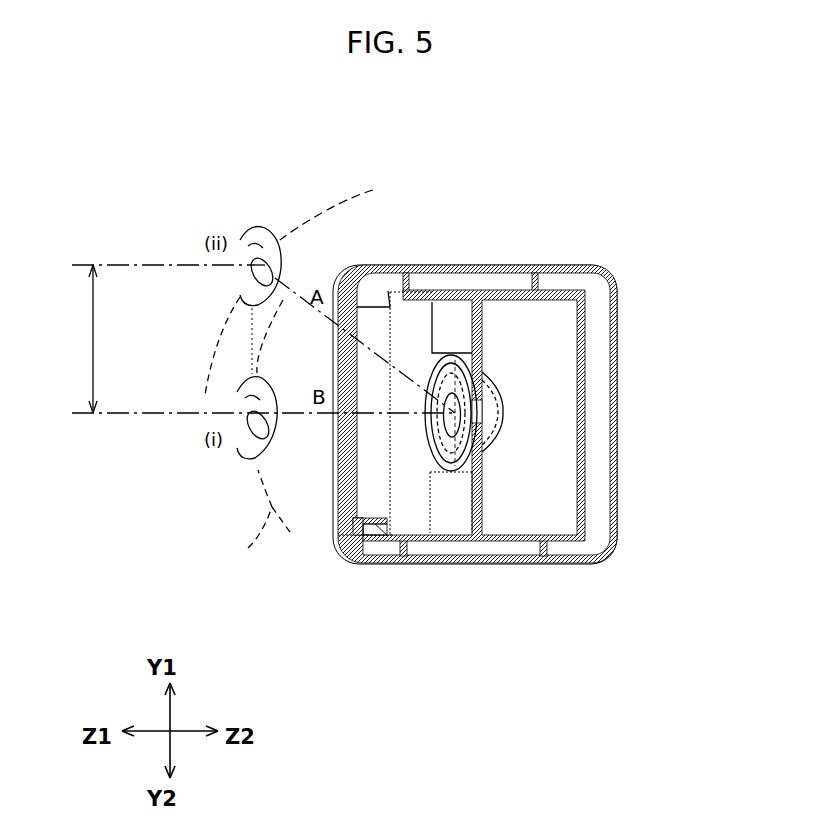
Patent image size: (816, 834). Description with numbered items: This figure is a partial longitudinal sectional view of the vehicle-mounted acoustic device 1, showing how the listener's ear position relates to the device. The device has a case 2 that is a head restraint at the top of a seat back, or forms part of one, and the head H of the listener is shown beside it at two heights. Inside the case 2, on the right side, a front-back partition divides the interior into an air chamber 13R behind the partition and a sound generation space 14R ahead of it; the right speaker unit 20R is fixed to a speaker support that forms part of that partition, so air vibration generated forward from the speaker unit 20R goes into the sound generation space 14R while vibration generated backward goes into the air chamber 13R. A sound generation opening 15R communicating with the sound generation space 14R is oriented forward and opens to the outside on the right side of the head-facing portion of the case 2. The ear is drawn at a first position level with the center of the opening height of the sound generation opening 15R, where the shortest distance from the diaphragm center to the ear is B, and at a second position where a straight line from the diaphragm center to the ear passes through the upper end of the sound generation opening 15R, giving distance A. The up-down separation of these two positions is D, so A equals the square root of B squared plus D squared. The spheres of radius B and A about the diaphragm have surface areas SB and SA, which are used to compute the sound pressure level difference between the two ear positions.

The vehicle-mounted acoustic device 1 is at (503, 235).
The case 2 is at (616, 327).
The air chamber 13R is at (557, 455).
The sound generation space 14R is at (403, 460).
The sound generation opening 15R is at (366, 516).
The speaker unit 20R is at (500, 394).
The head H is at (252, 229).
The surface area of sphere with radius A SA is at (340, 186).
The surface area of sphere with radius B SB is at (252, 520).
The distance between ear positions D is at (262, 339).